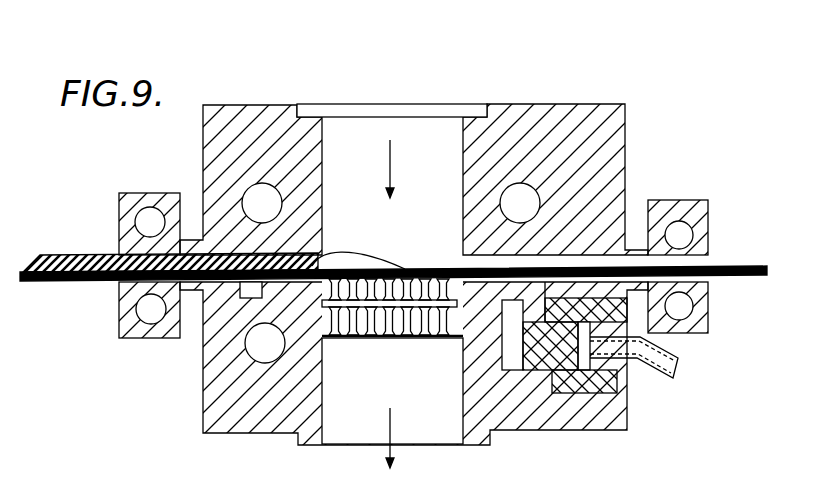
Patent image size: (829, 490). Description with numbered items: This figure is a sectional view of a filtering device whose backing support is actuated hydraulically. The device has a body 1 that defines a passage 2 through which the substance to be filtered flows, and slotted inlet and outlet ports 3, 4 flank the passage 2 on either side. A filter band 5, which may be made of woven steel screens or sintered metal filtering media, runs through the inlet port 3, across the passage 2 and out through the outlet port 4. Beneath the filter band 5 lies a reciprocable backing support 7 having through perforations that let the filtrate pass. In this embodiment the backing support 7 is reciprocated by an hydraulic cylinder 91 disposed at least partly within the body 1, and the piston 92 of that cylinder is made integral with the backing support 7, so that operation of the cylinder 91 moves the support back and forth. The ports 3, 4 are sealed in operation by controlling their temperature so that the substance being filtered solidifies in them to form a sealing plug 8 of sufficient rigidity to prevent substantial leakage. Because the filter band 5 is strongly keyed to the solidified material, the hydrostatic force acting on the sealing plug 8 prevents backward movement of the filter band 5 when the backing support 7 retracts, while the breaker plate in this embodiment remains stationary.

The body 1 is at (511, 113).
The passage 2 is at (347, 122).
The inlet port 3 is at (672, 199).
The outlet port 4 is at (128, 205).
The filter band 5 is at (53, 281).
The backing support 7 is at (333, 252).
The sealing plug 8 is at (72, 256).
The hydraulic cylinder 91 is at (585, 355).
The piston 92 is at (548, 358).